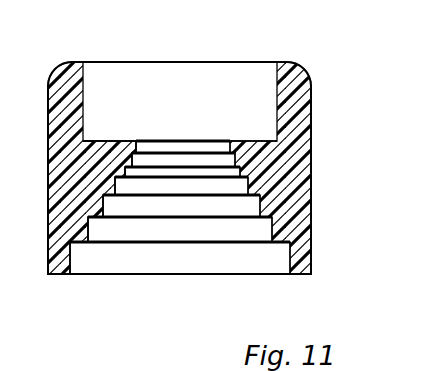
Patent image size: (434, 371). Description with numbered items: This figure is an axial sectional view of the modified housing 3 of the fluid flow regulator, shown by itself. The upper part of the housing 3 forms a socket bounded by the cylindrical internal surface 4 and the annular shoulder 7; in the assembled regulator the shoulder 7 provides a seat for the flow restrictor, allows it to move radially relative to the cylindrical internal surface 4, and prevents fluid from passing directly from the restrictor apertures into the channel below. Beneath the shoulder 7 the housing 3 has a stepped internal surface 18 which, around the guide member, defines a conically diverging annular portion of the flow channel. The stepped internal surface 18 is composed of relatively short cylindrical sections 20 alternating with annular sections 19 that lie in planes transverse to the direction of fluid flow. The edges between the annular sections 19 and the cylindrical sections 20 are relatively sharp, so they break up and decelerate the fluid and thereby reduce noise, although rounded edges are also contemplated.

The housing 3 is at (298, 83).
The cylindrical internal surface 4 is at (276, 88).
The annular shoulder 7 is at (240, 141).
The stepped internal surface 18 is at (160, 206).
The annular sections 19 is at (95, 214).
The cylindrical sections 20 is at (113, 206).